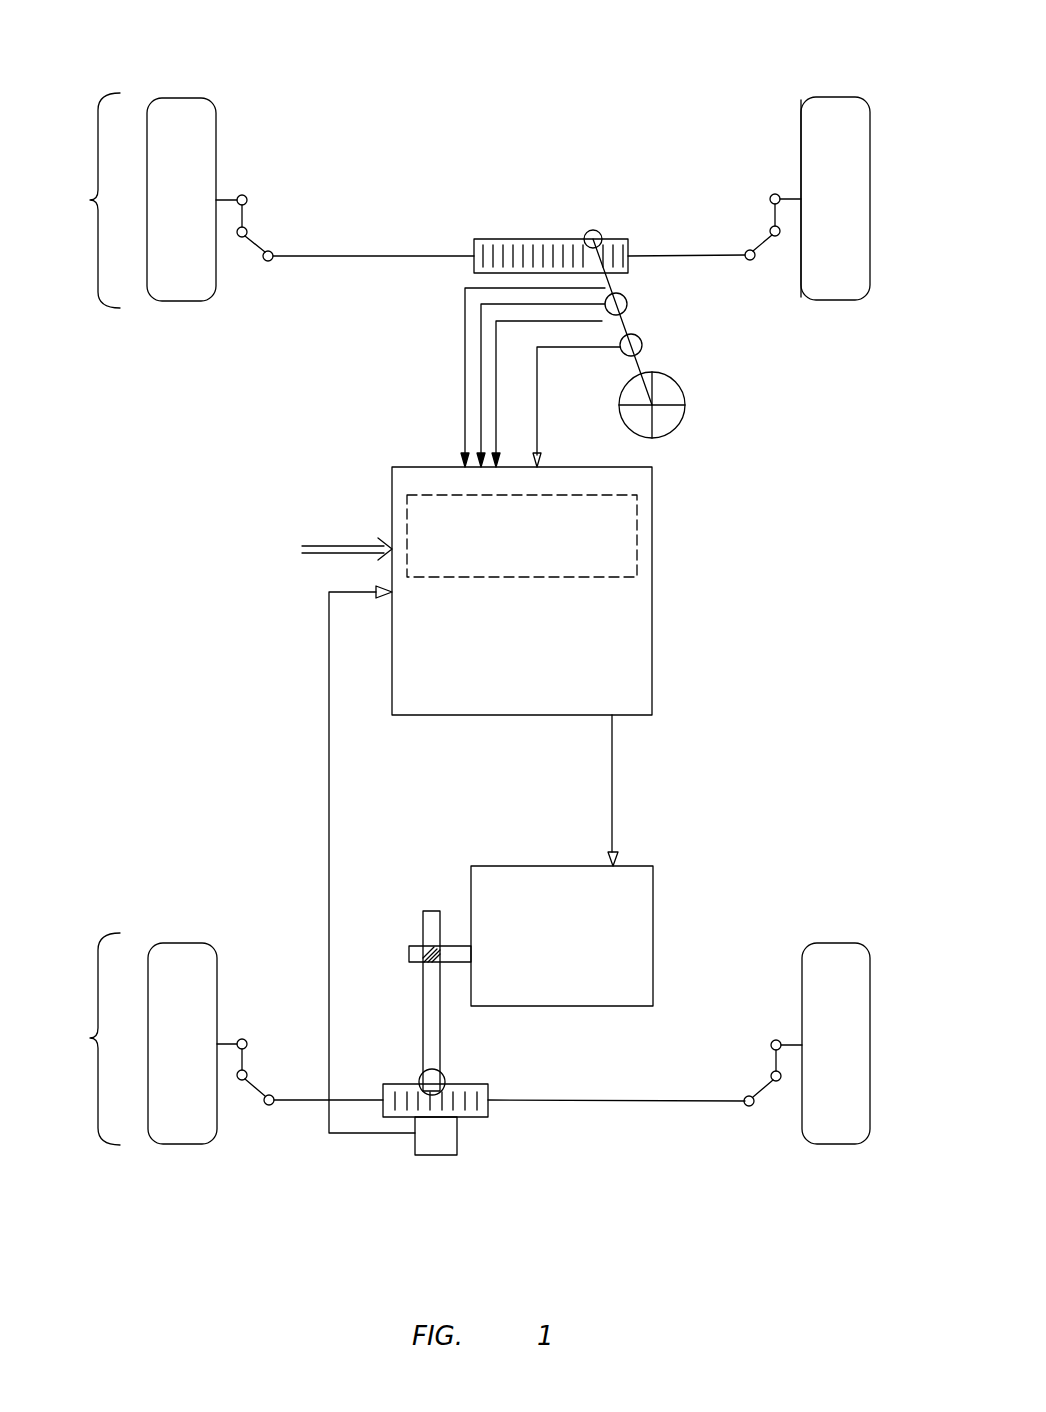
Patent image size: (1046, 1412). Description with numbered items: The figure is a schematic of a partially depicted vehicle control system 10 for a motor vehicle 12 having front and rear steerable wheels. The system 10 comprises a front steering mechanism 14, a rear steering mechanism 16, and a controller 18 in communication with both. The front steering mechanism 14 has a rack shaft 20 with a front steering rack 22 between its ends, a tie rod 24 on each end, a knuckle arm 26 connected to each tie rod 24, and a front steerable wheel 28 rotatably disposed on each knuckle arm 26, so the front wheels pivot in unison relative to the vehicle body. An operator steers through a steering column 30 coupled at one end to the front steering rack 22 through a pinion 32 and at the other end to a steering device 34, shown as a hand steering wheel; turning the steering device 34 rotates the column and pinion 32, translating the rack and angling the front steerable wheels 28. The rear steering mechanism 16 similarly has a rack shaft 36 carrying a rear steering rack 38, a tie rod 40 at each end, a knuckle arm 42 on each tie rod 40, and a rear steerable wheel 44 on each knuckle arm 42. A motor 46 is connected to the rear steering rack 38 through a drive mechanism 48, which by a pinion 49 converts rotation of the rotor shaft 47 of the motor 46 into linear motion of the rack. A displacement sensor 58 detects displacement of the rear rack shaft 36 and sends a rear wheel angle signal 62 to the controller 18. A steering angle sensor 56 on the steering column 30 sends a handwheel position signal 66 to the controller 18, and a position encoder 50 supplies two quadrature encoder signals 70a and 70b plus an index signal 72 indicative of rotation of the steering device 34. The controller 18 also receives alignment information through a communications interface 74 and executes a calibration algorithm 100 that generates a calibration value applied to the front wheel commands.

The vehicle control system 10 is at (649, 98).
The motor vehicle 12 is at (876, 149).
The front steering mechanism 14 is at (81, 200).
The rear steering mechanism 16 is at (81, 1039).
The controller 18 is at (653, 645).
The rack shaft 20 is at (710, 258).
The front steering rack 22 is at (528, 238).
The tie rod 24 is at (258, 250).
The knuckle arm 26 is at (248, 210).
The front steerable wheel 28 is at (178, 303).
The steering column 30 is at (647, 367).
The pinion 32 is at (593, 230).
The steering device 34 is at (687, 423).
The rack shaft 36 is at (525, 1102).
The rear steering rack 38 is at (478, 1119).
The tie rod 40 is at (258, 1097).
The knuckle arm 42 is at (248, 1058).
The rear steerable wheel 44 is at (185, 1146).
The motor 46 is at (545, 953).
The rotor shaft 47 is at (409, 948).
The drive mechanism 48 is at (423, 990).
The pinion 49 is at (440, 1078).
The position encoder 50 is at (627, 298).
The steering angle sensor 56 is at (623, 357).
The displacement sensor 58 is at (435, 1157).
The rear wheel angle signal 62 is at (329, 805).
The handwheel position signal 66 is at (537, 423).
The quadrature encoder signal 70a is at (465, 310).
The quadrature encoder signal 70b is at (481, 357).
The index signal 72 is at (496, 408).
The communications interface 74 is at (325, 549).
The calibration algorithm 100 is at (578, 577).